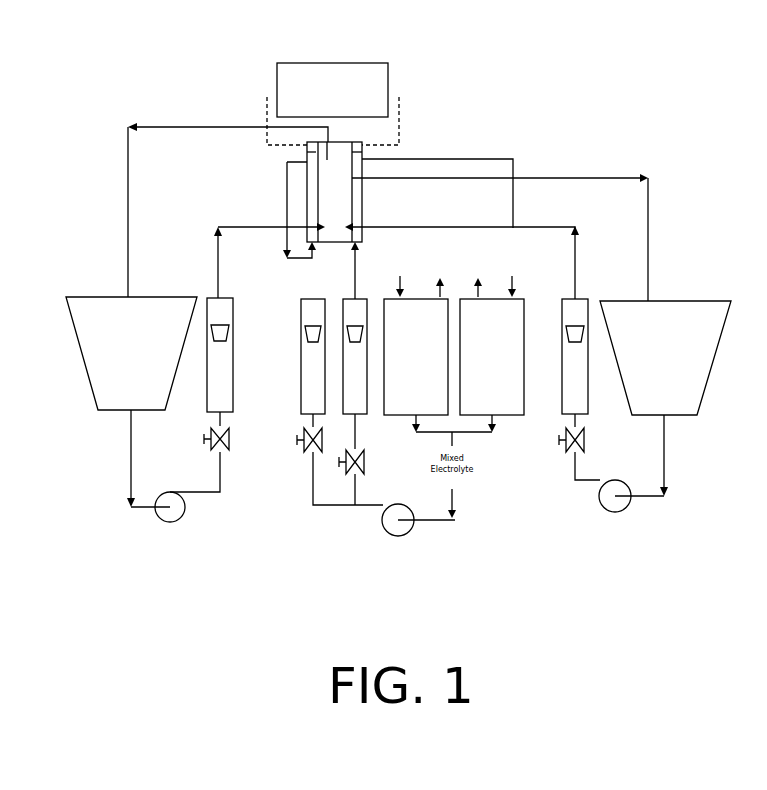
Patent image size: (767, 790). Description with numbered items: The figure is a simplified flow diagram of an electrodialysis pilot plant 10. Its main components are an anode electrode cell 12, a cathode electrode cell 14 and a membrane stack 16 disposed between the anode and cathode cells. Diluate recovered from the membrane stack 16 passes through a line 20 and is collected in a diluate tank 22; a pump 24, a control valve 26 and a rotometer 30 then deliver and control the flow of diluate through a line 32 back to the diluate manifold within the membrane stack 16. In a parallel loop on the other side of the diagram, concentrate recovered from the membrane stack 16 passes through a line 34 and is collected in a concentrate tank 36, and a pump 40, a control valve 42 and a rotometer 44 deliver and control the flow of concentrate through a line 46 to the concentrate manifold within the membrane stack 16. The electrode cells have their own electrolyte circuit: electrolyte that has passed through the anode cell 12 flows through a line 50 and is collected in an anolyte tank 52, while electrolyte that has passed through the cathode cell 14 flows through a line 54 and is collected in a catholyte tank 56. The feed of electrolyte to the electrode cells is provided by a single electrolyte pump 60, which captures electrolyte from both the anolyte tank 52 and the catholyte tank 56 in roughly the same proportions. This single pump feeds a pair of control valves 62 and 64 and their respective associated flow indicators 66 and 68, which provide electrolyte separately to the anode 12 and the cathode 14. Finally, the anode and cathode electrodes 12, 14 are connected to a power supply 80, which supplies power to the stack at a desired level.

The electrodialysis pilot plant 10 is at (634, 104).
The anode electrode cell 12 is at (312, 152).
The cathode electrode cell 14 is at (362, 152).
The membrane stack 16 is at (326, 209).
The line 20 is at (162, 127).
The diluate tank 22 is at (131, 353).
The pump 24 is at (182, 508).
The control valve 26 is at (228, 438).
The rotometer 30 is at (233, 338).
The line 32 is at (234, 227).
The line 34 is at (648, 228).
The concentrate tank 36 is at (665, 358).
The pump 40 is at (600, 503).
The control valve 42 is at (568, 453).
The rotometer 44 is at (578, 293).
The line 46 is at (530, 228).
The line 50 is at (287, 241).
The anolyte tank 52 is at (411, 332).
The line 54 is at (590, 178).
The catholyte tank 56 is at (503, 328).
The electrolyte pump 60 is at (383, 528).
The control valve 62 is at (305, 452).
The control valve 64 is at (350, 473).
The flow indicator 66 is at (300, 373).
The flow indicator 68 is at (366, 283).
The power supply 80 is at (315, 63).